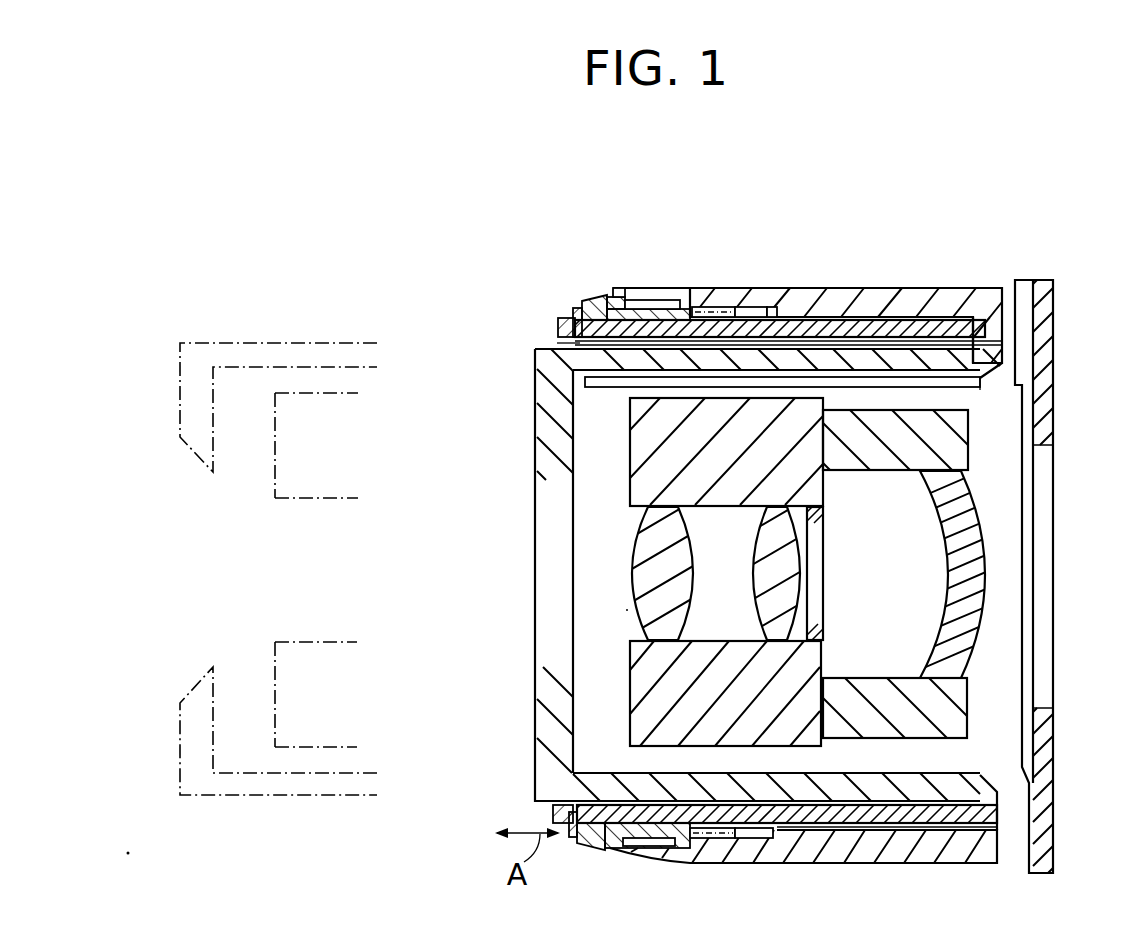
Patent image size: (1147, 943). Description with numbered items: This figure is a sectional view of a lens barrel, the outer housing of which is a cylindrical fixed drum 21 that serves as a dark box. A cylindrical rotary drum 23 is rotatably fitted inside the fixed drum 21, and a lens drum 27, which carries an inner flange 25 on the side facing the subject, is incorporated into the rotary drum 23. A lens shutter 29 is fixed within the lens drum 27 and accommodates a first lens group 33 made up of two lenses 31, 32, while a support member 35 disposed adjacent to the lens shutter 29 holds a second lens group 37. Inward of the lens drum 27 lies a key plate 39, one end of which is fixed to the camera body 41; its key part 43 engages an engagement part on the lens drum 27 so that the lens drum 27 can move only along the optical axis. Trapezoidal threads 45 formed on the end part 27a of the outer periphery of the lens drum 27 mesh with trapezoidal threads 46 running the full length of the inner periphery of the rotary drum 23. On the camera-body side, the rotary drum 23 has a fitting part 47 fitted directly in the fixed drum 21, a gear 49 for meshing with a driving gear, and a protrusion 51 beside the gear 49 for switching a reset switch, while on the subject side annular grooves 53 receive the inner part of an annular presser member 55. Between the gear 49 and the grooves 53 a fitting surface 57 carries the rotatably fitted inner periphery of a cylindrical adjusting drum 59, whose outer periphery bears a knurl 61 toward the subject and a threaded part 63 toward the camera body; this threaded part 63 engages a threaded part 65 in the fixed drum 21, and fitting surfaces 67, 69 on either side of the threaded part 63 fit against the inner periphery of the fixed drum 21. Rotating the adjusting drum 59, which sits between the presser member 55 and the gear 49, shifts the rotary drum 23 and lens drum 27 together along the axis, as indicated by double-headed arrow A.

The fixed drum 21 is at (712, 287).
The rotary drum 23 is at (843, 330).
The inner flange 25 is at (538, 395).
The lens drum 27 is at (973, 330).
The end part 27a is at (990, 287).
The lens shutter 29 is at (643, 686).
The lens 31 is at (648, 545).
The lens 32 is at (772, 548).
The first lens group 33 is at (622, 610).
The support member 35 is at (953, 717).
The second lens group 37 is at (970, 617).
The key plate 39 is at (982, 390).
The camera body 41 is at (1042, 385).
The key part 43 is at (607, 388).
The trapezoidal threads 45 is at (1002, 360).
The trapezoidal threads 46 is at (917, 360).
The fitting part 47 is at (972, 343).
The gear 49 is at (765, 288).
The protrusion 51 is at (775, 287).
The annular grooves 53 is at (565, 327).
The presser member 55 is at (572, 308).
The fitting surface 57 is at (590, 348).
The adjusting drum 59 is at (613, 293).
The knurl 61 is at (580, 300).
The threaded part 63 is at (647, 287).
The threaded part 65 is at (658, 293).
The fitting surface 67 is at (695, 287).
The fitting surface 69 is at (615, 283).